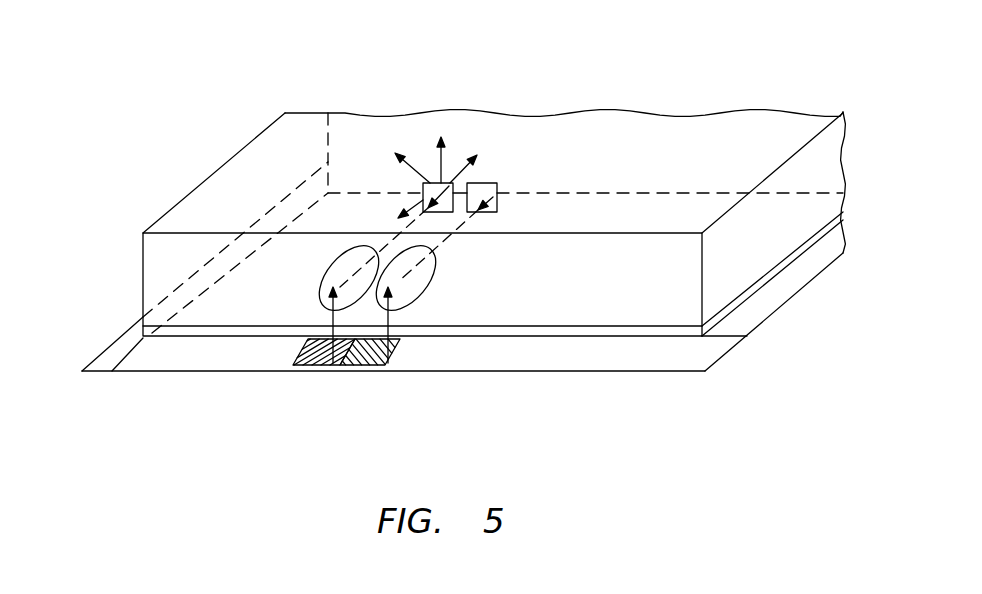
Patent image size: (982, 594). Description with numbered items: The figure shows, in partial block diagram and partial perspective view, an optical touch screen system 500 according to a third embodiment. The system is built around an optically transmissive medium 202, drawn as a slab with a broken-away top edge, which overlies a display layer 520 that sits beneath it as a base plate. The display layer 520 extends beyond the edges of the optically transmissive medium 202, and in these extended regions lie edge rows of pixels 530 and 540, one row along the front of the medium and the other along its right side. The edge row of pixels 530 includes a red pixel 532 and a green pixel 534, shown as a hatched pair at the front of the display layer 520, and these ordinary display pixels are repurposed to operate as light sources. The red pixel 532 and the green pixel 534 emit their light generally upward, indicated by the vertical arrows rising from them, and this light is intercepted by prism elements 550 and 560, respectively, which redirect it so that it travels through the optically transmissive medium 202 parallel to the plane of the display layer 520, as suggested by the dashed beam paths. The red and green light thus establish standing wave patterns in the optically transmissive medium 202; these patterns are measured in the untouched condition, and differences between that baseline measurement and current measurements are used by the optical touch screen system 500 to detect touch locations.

The optical touch screen system 500 is at (156, 63).
The optically transmissive medium 202 is at (230, 177).
The display layer 520 is at (706, 370).
The edge row of pixels 530 is at (188, 350).
The red pixel 532 is at (308, 362).
The green pixel 534 is at (357, 362).
The edge row of pixels 540 is at (762, 312).
The prism element 550 is at (320, 290).
The prism element 560 is at (434, 276).